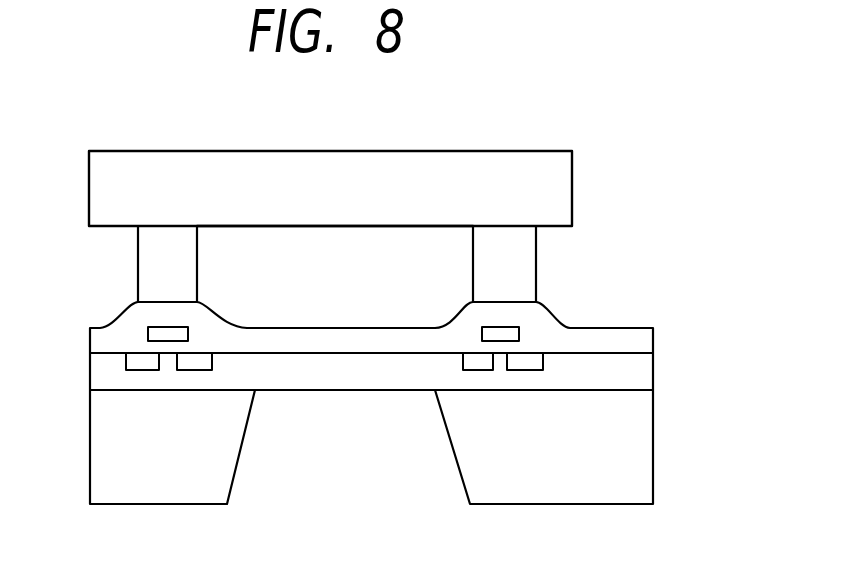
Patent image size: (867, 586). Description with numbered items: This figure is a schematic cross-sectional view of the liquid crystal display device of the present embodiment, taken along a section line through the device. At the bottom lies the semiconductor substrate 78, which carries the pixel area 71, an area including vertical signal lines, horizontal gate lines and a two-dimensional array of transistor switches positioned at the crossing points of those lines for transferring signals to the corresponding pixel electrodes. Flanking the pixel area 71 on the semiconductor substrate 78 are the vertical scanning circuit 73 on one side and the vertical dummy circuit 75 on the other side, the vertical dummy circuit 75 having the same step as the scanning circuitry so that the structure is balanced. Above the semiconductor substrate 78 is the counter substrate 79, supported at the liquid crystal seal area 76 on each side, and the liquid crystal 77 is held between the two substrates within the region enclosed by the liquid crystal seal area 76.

The pixel area 71 is at (432, 318).
The vertical scanning circuit 73 is at (500, 375).
The vertical dummy circuit 75 is at (165, 373).
The liquid crystal seal area 76 is at (153, 273).
The liquid crystal 77 is at (377, 238).
The semiconductor substrate 78 is at (638, 373).
The counter substrate 79 is at (562, 173).